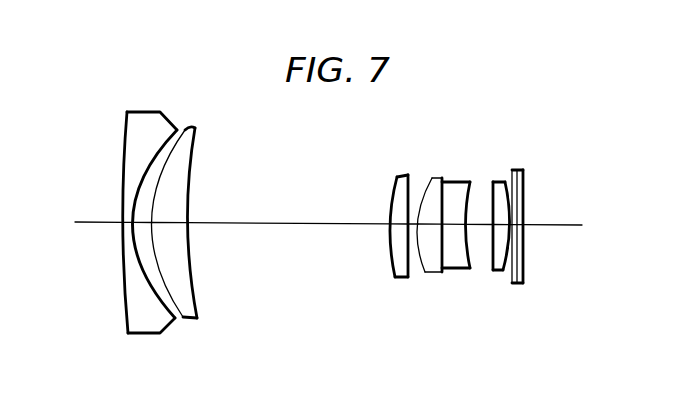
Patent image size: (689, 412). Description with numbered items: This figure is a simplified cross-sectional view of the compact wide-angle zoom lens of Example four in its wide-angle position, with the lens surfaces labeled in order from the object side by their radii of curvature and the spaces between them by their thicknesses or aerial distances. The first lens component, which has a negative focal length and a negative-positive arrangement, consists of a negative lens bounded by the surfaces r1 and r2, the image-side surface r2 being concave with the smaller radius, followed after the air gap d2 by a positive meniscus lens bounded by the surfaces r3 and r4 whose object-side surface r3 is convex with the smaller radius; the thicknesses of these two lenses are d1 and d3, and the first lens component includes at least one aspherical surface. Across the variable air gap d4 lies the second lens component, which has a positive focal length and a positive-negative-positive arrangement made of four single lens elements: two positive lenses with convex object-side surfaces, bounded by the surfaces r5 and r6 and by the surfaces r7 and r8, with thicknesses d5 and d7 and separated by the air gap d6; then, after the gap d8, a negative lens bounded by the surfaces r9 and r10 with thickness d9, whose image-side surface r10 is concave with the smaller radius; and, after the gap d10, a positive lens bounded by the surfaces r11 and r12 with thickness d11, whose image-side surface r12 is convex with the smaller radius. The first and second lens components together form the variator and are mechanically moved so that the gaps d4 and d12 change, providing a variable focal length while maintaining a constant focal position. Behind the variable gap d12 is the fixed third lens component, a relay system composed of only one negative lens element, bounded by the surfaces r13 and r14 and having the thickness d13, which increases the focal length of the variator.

The radius of curvature of the first surface r1 is at (124, 113).
The radius of curvature of the second surface r2 is at (160, 145).
The radius of curvature of the third surface r3 is at (192, 128).
The radius of curvature of the fourth surface r4 is at (197, 150).
The radius of curvature of the fifth surface r5 is at (390, 180).
The radius of curvature of the sixth surface r6 is at (409, 176).
The radius of curvature of the seventh surface r7 is at (430, 178).
The radius of curvature of the eighth surface r8 is at (441, 190).
The radius of curvature of the ninth surface r9 is at (468, 182).
The radius of curvature of the tenth surface r10 is at (489, 197).
The radius of curvature of the eleventh surface r11 is at (503, 193).
The radius of curvature of the twelfth surface r12 is at (509, 188).
The radius of curvature of the thirteenth surface r13 is at (524, 178).
The radius of curvature of the fourteenth surface r14 is at (525, 190).
The thickness of the first lens d1 is at (122, 228).
The aerial distance between the first and second lenses d2 is at (150, 228).
The thickness of the second lens d3 is at (170, 228).
The aerial distance between the first and second lens components d4 is at (389, 229).
The thickness of the third lens d5 is at (400, 229).
The aerial distance between the third and fourth lenses d6 is at (413, 229).
The thickness of the fourth lens d7 is at (436, 229).
The aerial distance between the fourth and fifth lenses d8 is at (455, 229).
The thickness of the fifth lens d9 is at (476, 229).
The aerial distance between the fifth and sixth lenses d10 is at (500, 229).
The thickness of the sixth lens d11 is at (511, 229).
The aerial distance between the second and third lens components d12 is at (515, 232).
The thickness of the seventh lens d13 is at (521, 240).